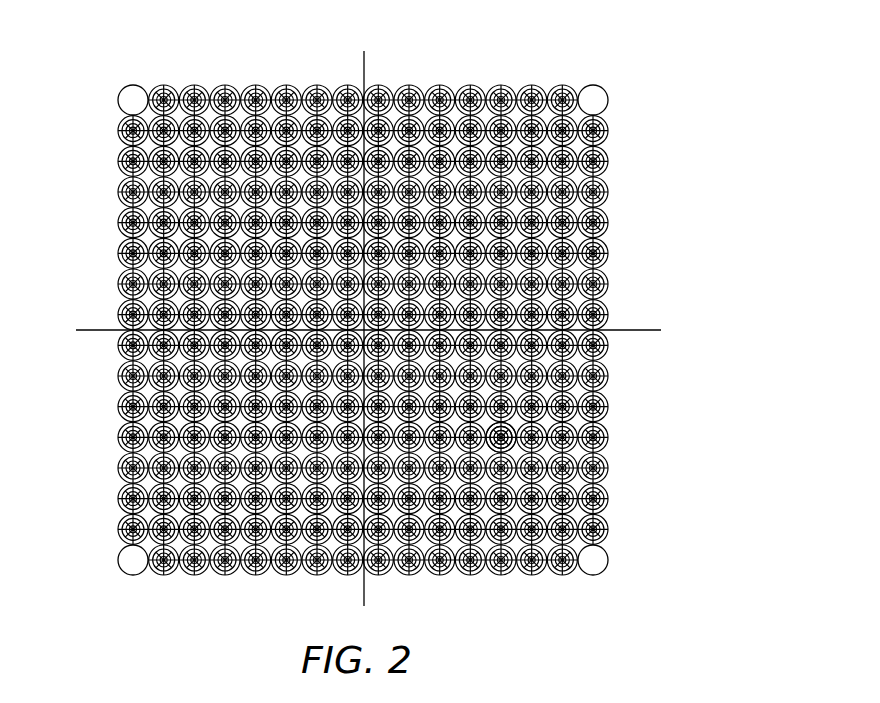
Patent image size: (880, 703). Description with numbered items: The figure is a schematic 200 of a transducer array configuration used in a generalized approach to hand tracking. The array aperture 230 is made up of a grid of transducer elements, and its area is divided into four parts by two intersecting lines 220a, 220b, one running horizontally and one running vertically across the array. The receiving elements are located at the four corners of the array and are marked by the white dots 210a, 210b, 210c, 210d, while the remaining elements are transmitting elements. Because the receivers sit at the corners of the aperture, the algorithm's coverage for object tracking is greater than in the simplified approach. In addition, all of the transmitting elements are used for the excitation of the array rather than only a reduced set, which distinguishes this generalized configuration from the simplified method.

The schematic 200 is at (614, 66).
The receiving element 210a is at (110, 92).
The receiving element 210b is at (600, 92).
The receiving element 210c is at (110, 552).
The receiving element 210d is at (600, 552).
The intersecting line 220a is at (72, 324).
The intersecting line 220b is at (357, 574).
The array aperture 230 is at (512, 438).